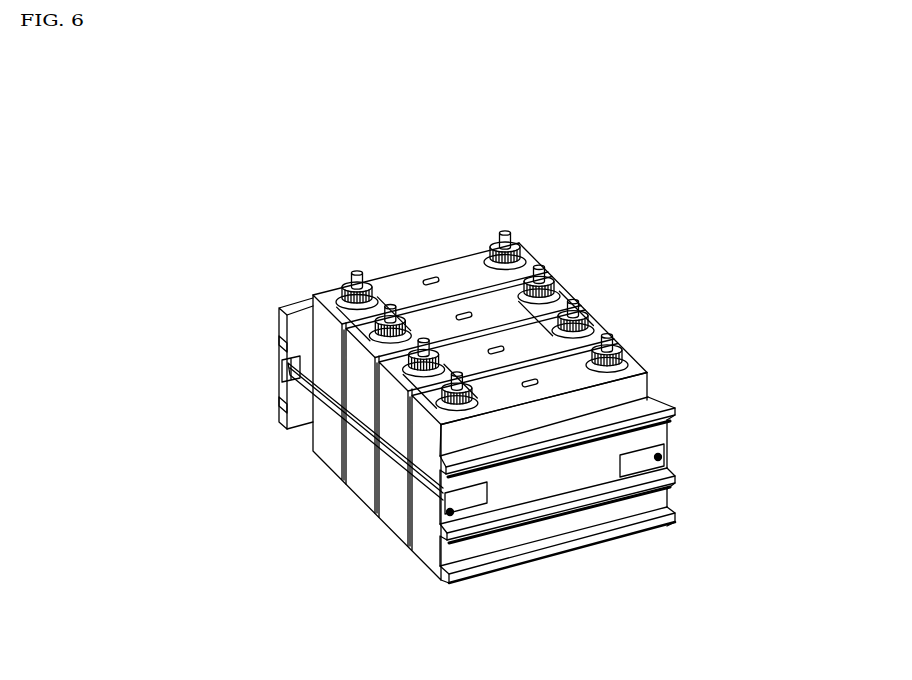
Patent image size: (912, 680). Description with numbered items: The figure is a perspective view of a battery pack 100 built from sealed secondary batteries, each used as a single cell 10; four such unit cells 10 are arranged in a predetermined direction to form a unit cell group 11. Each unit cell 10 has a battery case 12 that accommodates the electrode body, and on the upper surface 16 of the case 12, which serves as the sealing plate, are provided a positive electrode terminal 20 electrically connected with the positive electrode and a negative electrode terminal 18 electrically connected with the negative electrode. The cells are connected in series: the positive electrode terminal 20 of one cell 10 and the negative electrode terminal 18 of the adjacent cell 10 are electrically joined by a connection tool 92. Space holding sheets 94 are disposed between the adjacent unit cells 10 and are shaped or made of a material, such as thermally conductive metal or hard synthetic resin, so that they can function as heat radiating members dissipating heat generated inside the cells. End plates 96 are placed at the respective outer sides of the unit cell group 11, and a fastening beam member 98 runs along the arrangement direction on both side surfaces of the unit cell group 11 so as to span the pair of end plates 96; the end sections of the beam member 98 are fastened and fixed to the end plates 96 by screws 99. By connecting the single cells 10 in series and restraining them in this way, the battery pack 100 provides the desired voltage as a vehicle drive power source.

The single cell 10 is at (368, 484).
The battery case 12 is at (330, 460).
The unit cell group 11 is at (668, 374).
The upper surface 16 is at (456, 267).
The negative electrode terminal 18 is at (391, 318).
The positive electrode terminal 20 is at (357, 273).
The connection tool 92 is at (375, 315).
The space holding sheet 94 is at (295, 447).
The end plate 96 is at (292, 312).
The fastening beam member 98 is at (290, 378).
The screw 99 is at (661, 456).
The battery pack 100 is at (787, 169).